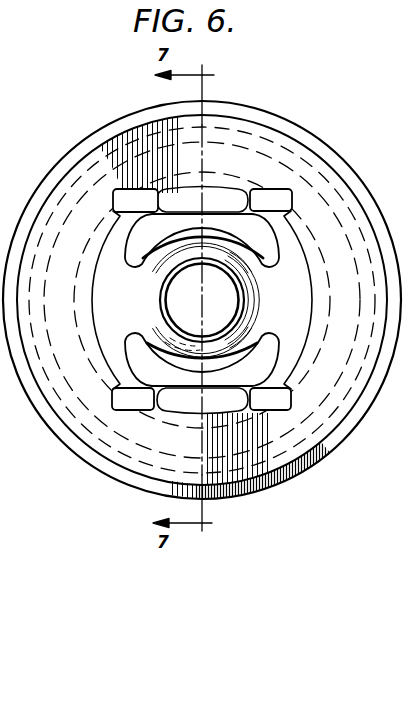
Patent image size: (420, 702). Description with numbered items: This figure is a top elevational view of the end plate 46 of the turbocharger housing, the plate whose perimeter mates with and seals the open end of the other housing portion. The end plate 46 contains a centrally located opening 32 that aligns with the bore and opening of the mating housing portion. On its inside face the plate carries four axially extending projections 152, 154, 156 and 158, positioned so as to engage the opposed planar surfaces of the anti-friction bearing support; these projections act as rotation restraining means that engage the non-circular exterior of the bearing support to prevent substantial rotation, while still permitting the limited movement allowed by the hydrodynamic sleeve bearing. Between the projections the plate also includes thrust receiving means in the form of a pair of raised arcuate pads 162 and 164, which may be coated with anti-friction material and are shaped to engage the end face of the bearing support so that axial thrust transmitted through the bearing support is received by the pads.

The end plate 46 is at (330, 153).
The opening 32 is at (178, 326).
The axially extending projection 152 is at (133, 199).
The axially extending projection 154 is at (268, 191).
The axially extending projection 156 is at (271, 400).
The axially extending projection 158 is at (123, 396).
The raised arcuate pad 162 is at (273, 342).
The raised arcuate pad 164 is at (272, 258).